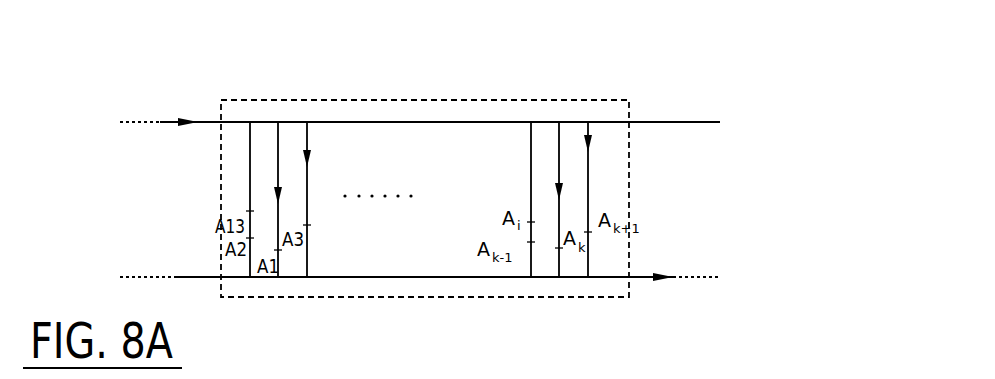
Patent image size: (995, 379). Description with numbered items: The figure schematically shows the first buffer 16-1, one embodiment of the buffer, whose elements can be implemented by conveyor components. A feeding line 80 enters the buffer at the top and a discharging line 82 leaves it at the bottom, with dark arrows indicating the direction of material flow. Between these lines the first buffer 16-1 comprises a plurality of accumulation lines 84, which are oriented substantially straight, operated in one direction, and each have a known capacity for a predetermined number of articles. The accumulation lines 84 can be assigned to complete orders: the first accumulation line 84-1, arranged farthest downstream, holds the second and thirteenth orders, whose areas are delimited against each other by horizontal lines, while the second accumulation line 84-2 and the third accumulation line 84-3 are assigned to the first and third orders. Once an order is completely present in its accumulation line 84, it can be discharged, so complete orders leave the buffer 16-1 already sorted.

The first buffer 16-1 is at (600, 95).
The feeding lines 80 is at (207, 121).
The discharging lines 82 is at (700, 280).
The accumulation lines 84 is at (526, 181).
The first accumulation line 84-1 is at (250, 175).
The second accumulation line 84-2 is at (280, 143).
The third accumulation line 84-3 is at (307, 140).